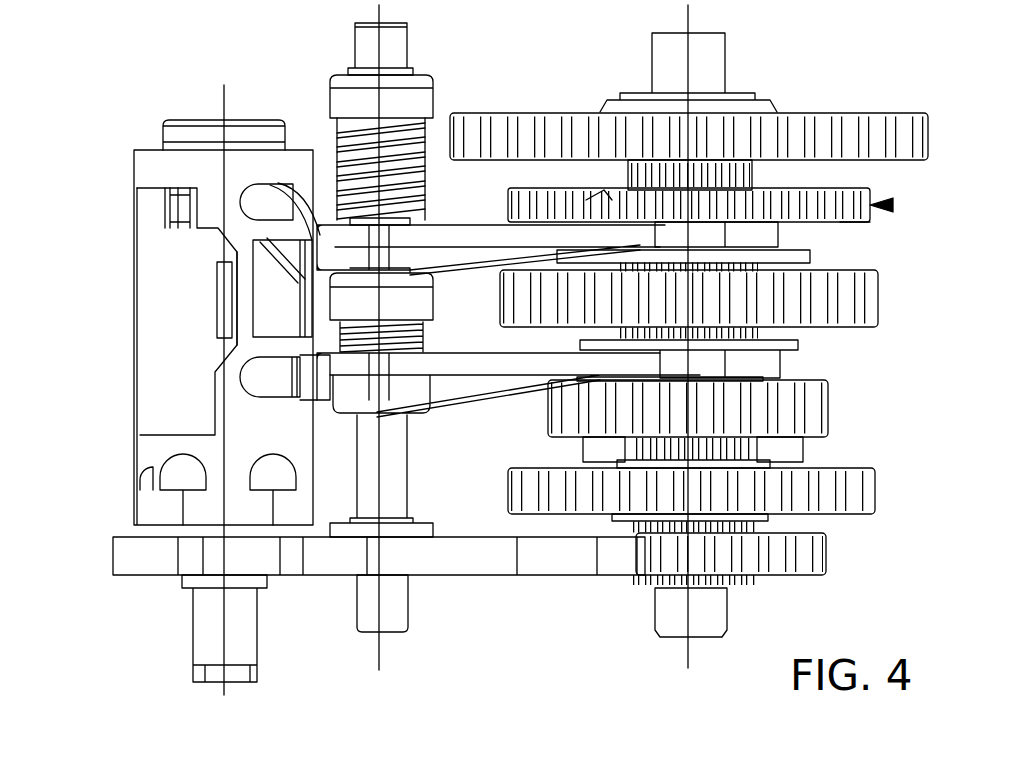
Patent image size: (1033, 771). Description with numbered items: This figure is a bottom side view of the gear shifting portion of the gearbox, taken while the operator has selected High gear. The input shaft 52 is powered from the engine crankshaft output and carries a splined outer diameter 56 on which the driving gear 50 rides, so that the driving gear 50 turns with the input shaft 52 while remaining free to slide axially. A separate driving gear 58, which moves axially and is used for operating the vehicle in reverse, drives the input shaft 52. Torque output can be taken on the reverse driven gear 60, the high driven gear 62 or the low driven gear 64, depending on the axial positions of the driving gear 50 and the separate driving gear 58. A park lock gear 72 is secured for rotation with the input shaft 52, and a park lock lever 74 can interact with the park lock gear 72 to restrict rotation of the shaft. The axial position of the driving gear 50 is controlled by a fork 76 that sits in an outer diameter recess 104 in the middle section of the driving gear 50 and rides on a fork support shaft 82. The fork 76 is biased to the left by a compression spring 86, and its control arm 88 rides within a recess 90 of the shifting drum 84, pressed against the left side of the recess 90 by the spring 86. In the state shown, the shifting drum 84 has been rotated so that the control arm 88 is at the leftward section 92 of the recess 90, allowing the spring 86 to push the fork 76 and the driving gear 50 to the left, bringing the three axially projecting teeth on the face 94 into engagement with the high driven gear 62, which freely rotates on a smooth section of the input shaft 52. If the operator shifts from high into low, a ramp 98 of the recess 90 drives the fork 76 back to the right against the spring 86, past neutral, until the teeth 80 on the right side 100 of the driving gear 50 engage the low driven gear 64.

The driving gear 50 is at (893, 205).
The input shaft 52 is at (720, 62).
The splined outer diameter 56 is at (748, 177).
The separate driving gear 58 is at (770, 365).
The reverse driven gear 60 is at (860, 490).
The high driven gear 62 is at (868, 315).
The low driven gear 64 is at (925, 135).
The park lock gear 72 is at (812, 548).
The park lock lever 74 is at (460, 565).
The fork 76 is at (447, 233).
The teeth 80 is at (612, 200).
The fork support shaft 82 is at (393, 50).
The shifting drum 84 is at (143, 170).
The compression spring 86 is at (438, 140).
The control arm 88 is at (322, 228).
The recess 90 is at (258, 203).
The leftward section 92 is at (315, 262).
The face 94 is at (852, 222).
The ramp 98 is at (296, 230).
The right side 100 is at (843, 190).
The outer diameter recess 104 is at (766, 236).